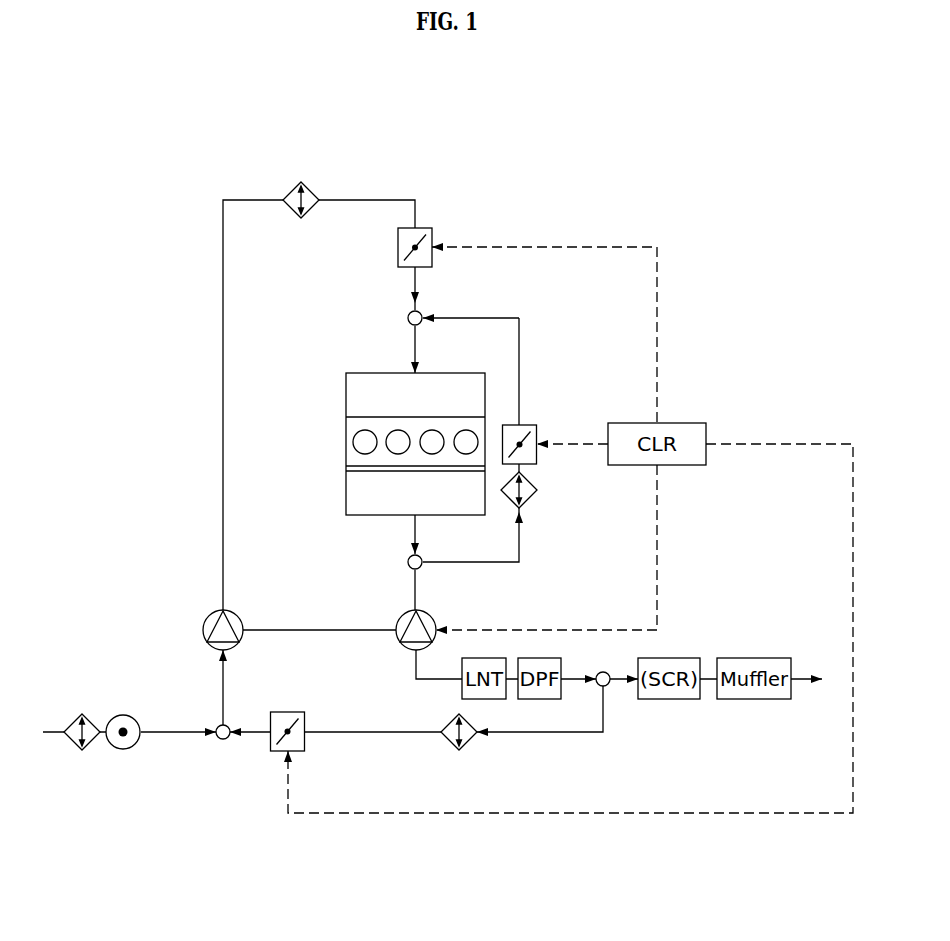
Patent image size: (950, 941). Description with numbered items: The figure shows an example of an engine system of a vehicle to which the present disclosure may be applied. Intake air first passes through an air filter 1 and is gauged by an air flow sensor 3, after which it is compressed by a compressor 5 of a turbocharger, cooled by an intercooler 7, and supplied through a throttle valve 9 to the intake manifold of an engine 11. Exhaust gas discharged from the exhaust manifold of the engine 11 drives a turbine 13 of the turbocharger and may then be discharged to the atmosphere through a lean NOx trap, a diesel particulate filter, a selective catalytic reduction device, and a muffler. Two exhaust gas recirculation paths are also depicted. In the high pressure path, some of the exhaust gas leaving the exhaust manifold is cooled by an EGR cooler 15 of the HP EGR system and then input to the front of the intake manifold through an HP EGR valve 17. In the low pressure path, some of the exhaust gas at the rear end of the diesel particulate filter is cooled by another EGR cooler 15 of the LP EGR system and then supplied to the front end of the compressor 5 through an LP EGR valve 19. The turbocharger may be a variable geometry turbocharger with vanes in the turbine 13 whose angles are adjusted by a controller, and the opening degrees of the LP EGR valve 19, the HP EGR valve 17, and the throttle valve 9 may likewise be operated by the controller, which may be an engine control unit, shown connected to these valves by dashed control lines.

The air filter 1 is at (80, 752).
The air flow sensor 3 is at (123, 752).
The compressor 5 is at (204, 627).
The intercooler 7 is at (313, 192).
The throttle valve 9 is at (432, 228).
The engine 11 is at (346, 440).
The turbine 13 is at (397, 625).
The EGR cooler 15 is at (538, 494).
The HP EGR valve 17 is at (532, 425).
The LP EGR valve 19 is at (291, 712).